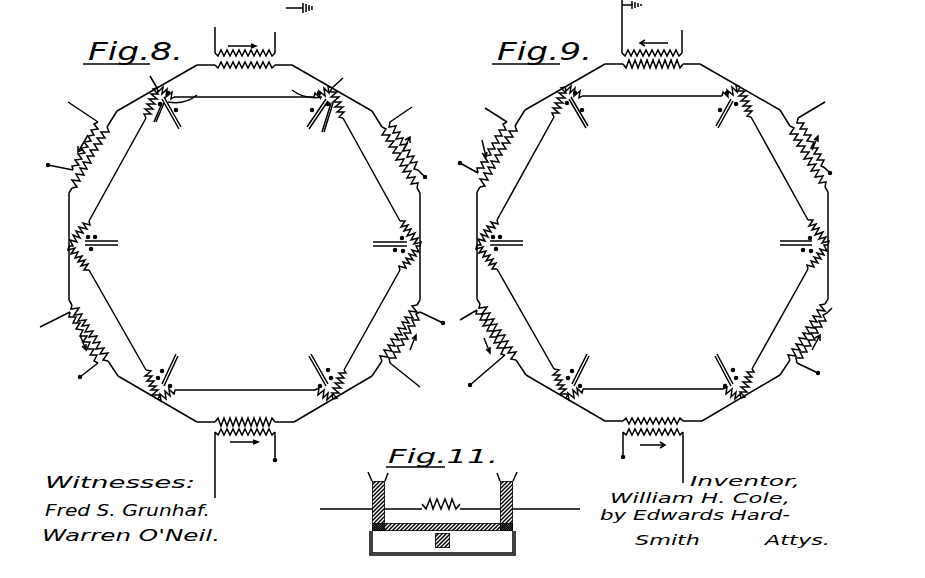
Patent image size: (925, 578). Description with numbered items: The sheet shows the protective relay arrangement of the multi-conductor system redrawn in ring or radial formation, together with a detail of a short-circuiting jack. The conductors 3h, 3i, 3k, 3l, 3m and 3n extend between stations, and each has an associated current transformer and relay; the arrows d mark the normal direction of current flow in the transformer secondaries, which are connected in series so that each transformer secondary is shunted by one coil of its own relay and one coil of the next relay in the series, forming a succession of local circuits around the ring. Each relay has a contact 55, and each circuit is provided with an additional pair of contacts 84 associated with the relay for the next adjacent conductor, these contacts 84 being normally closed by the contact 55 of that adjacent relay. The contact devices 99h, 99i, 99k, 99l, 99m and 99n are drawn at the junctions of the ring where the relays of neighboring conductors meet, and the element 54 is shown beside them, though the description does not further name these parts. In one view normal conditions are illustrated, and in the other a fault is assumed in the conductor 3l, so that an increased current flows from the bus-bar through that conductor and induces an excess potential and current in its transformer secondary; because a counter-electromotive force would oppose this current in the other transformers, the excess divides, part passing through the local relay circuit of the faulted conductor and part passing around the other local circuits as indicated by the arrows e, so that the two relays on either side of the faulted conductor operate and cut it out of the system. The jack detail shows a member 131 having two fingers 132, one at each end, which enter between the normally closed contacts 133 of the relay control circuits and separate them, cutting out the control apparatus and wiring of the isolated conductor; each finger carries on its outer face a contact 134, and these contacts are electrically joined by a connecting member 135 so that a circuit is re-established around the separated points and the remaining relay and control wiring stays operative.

In FIG. 8, the conductor 3l is at (263, 29).
In FIG. 9, the conductor 3l is at (640, 28).
In FIG. 8, the conductor 3m is at (73, 127).
In FIG. 9, the conductor 3m is at (808, 130).
In FIG. 8, the conductor 3n is at (69, 337).
In FIG. 9, the conductor 3n is at (812, 348).
In FIG. 8, the conductor 3k is at (417, 146).
In FIG. 9, the conductor 3k is at (482, 140).
In FIG. 8, the conductor 3i is at (411, 360).
In FIG. 9, the conductor 3i is at (482, 348).
In FIG. 8, the conductor 3h is at (233, 463).
In FIG. 9, the conductor 3h is at (665, 456).
In FIG. 8, the commutator contact 99l is at (185, 111).
In FIG. 9, the commutator contact 99l is at (713, 111).
In FIG. 8, the commutator contact 99m is at (109, 235).
In FIG. 9, the commutator contact 99m is at (786, 239).
In FIG. 8, the commutator contact 99n is at (181, 371).
In FIG. 9, the commutator contact 99n is at (730, 360).
In FIG. 8, the commutator contact 99k is at (304, 111).
In FIG. 9, the commutator contact 99k is at (573, 122).
In FIG. 8, the commutator contact 99i is at (384, 235).
In FIG. 9, the commutator contact 99i is at (510, 252).
In FIG. 8, the commutator contact 99h is at (323, 361).
In FIG. 9, the commutator contact 99h is at (594, 371).
In FIG. 8, the brush 54 is at (252, 115).
In FIG. 8, the relay contact 55 is at (249, 75).
In FIG. 8, the additional pair of contacts 84 is at (234, 113).
In FIG. 8, the arrows indicating normal secondary current direction d is at (390, 326).
In FIG. 9, the arrows indicating normal secondary current direction d is at (798, 326).
In FIG. 8, the arrows indicating divided excess current e is at (246, 242).
In FIG. 9, the arrows indicating divided excess current e is at (654, 241).
In FIG. 11, the jack member 131 is at (476, 522).
In FIG. 11, the fingers 132 is at (515, 502).
In FIG. 11, the contacts 133 is at (504, 484).
In FIG. 11, the finger contact 134 is at (513, 527).
In FIG. 11, the connecting member 135 is at (372, 548).